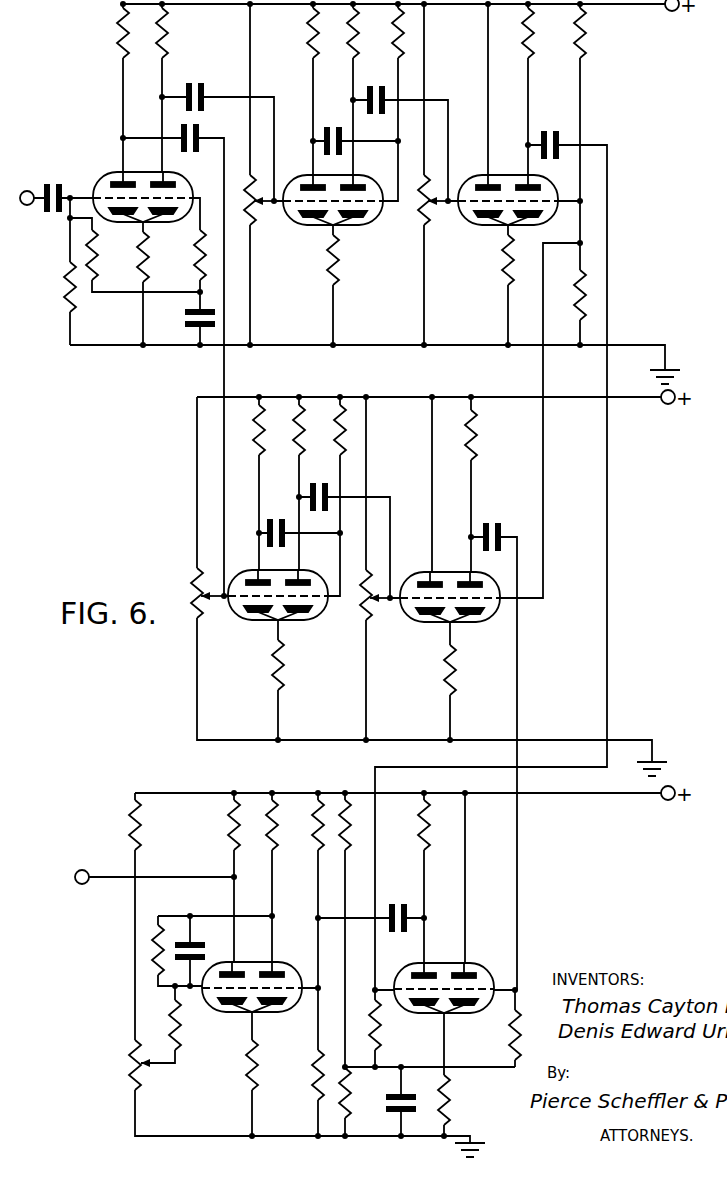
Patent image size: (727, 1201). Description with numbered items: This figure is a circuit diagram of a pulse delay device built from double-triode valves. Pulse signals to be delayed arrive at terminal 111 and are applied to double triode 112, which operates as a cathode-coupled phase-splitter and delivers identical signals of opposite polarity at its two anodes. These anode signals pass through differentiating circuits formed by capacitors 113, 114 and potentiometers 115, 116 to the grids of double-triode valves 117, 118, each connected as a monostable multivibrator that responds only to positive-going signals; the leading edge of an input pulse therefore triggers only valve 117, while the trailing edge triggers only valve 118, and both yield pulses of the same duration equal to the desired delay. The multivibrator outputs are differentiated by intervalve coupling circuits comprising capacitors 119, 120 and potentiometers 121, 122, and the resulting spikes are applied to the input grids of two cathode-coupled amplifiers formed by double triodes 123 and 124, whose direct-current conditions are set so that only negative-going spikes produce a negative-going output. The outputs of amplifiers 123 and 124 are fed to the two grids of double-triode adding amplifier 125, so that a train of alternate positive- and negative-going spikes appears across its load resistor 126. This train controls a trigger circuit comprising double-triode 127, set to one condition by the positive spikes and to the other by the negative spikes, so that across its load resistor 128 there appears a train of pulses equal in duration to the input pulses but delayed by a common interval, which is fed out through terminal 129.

The terminal 111 is at (39, 190).
The double triode 112 is at (139, 185).
The capacitor 113 is at (218, 93).
The capacitor 114 is at (214, 135).
The potentiometer 115 is at (269, 205).
The potentiometer 116 is at (215, 600).
The double-triode valve 117 is at (329, 188).
The double-triode valve 118 is at (275, 583).
The capacitor 119 is at (378, 115).
The capacitor 120 is at (320, 488).
The potentiometer 121 is at (444, 205).
The potentiometer 122 is at (383, 602).
The double triode 123 is at (503, 189).
The double triode 124 is at (444, 587).
The double-triode adding amplifier 125 is at (450, 979).
The load resistor 126 is at (405, 827).
The double-triode trigger circuit 127 is at (258, 978).
The load resistor 128 is at (211, 826).
The terminal 129 is at (84, 865).